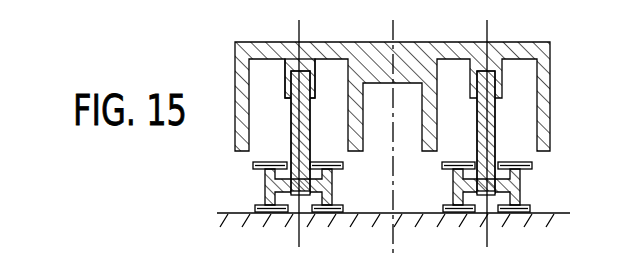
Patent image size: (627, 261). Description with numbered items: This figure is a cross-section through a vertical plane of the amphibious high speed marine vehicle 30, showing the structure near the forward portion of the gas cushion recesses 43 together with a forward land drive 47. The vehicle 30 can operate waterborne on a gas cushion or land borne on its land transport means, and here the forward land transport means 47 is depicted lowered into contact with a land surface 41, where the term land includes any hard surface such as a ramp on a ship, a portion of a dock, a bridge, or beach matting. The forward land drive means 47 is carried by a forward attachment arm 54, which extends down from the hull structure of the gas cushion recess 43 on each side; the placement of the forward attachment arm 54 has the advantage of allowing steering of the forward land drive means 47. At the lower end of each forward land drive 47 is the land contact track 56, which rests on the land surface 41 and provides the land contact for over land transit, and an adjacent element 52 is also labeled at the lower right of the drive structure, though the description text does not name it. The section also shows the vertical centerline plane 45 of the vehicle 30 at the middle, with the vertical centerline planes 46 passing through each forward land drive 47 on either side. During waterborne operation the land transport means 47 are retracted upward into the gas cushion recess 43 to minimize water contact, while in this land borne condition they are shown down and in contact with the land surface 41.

The amphibious high speed marine vehicle 30 is at (550, 60).
The gas cushion recess 43 is at (349, 86).
The forward attachment arm 54 is at (301, 154).
The forward land transport means 47 is at (343, 166).
The land contact track 56 is at (255, 166).
The support frame 52 is at (532, 166).
The land surface 41 is at (396, 210).
The vertical centerline plane 45 is at (393, 34).
The vertical centerline planes 46 is at (299, 34).